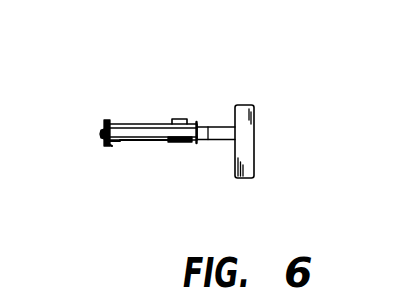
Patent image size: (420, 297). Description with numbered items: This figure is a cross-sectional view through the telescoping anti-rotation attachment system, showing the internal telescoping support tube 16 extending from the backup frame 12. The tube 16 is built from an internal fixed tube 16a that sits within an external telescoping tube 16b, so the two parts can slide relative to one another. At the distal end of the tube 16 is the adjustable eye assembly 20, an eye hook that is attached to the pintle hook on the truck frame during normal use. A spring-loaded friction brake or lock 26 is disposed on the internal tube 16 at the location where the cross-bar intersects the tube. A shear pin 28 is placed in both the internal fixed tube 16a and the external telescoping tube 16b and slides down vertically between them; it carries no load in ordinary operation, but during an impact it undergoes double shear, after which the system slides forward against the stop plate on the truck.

The backup frame 12 is at (262, 173).
The internal telescoping support tube 16 is at (141, 114).
The internal fixed tube 16a is at (111, 147).
The external telescoping tube 16b is at (149, 142).
The adjustable eye assembly 20 is at (101, 133).
The spring-loaded friction brake 26 is at (177, 108).
The shear pin 28 is at (197, 145).